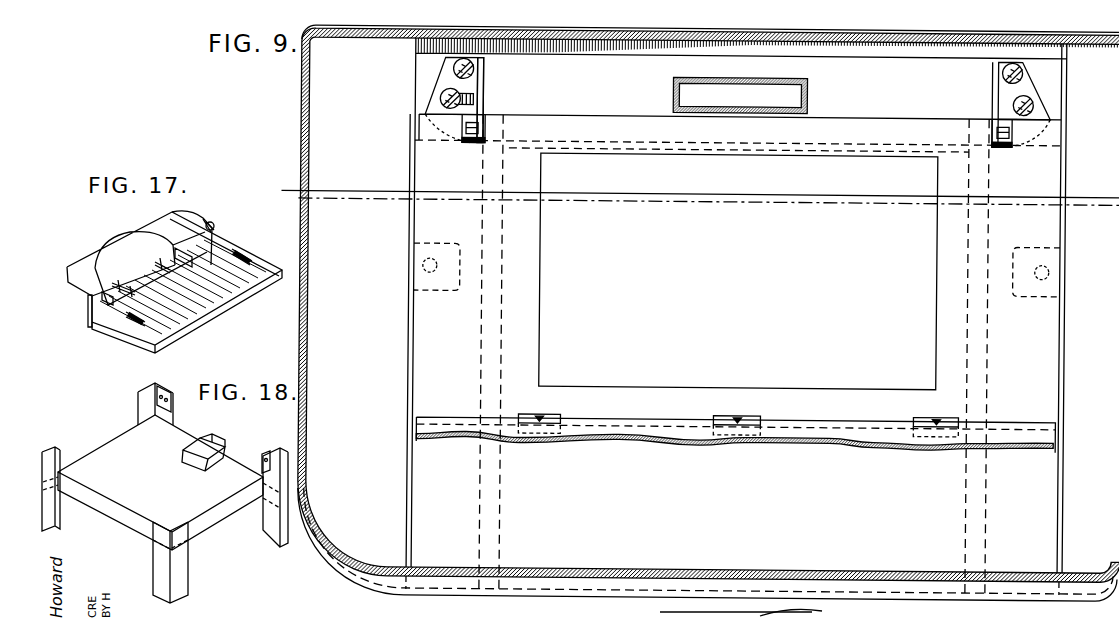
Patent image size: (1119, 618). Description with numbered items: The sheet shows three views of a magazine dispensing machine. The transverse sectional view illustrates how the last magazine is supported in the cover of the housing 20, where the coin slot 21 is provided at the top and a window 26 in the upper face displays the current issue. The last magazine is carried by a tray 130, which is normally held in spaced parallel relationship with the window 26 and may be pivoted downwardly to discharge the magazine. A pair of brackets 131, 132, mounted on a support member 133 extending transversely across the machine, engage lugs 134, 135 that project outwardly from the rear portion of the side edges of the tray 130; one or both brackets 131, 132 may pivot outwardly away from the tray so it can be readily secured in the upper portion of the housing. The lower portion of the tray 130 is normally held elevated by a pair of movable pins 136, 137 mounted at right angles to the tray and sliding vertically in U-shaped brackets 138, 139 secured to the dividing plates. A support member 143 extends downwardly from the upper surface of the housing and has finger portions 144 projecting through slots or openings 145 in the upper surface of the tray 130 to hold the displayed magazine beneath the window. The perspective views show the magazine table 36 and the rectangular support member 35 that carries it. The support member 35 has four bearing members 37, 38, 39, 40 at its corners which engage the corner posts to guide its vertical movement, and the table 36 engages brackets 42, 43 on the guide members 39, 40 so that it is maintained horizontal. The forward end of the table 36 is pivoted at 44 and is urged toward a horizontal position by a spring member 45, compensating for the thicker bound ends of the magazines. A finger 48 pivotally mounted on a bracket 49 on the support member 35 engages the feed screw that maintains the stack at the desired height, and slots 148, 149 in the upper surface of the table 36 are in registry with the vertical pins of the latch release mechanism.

In FIG. 9, the housing 20 is at (348, 575).
In FIG. 9, the coin slot 21 is at (806, 609).
In FIG. 9, the window 26 is at (675, 609).
In FIG. 9, the tray 130 is at (748, 295).
In FIG. 9, the bracket 131 is at (1013, 90).
In FIG. 9, the bracket 132 is at (476, 87).
In FIG. 9, the support member 133 is at (418, 83).
In FIG. 9, the lug 134 is at (1003, 146).
In FIG. 9, the lug 135 is at (470, 142).
In FIG. 9, the movable pin 136 is at (1050, 276).
In FIG. 9, the movable pin 137 is at (432, 272).
In FIG. 9, the U-shaped bracket 138 is at (1023, 247).
In FIG. 9, the U-shaped bracket 139 is at (447, 243).
In FIG. 9, the support member 143 is at (851, 447).
In FIG. 9, the finger portion 144 is at (551, 433).
In FIG. 9, the slot or opening 145 is at (540, 414).
In FIG. 18, the support member 35 is at (128, 435).
In FIG. 17, the magazine table 36 is at (260, 219).
In FIG. 18, the bearing member 37 is at (183, 573).
In FIG. 18, the bearing member 38 is at (100, 541).
In FIG. 18, the bearing member 39 is at (146, 386).
In FIG. 18, the bearing member 40 is at (270, 456).
In FIG. 18, the bracket 42 is at (160, 388).
In FIG. 18, the bracket 43 is at (262, 458).
In FIG. 17, the pivot 44 is at (211, 224).
In FIG. 17, the spring member 45 is at (130, 240).
In FIG. 18, the finger 48 is at (215, 443).
In FIG. 18, the bracket 49 is at (188, 455).
In FIG. 17, the slot 148 is at (244, 257).
In FIG. 17, the slot 149 is at (138, 326).